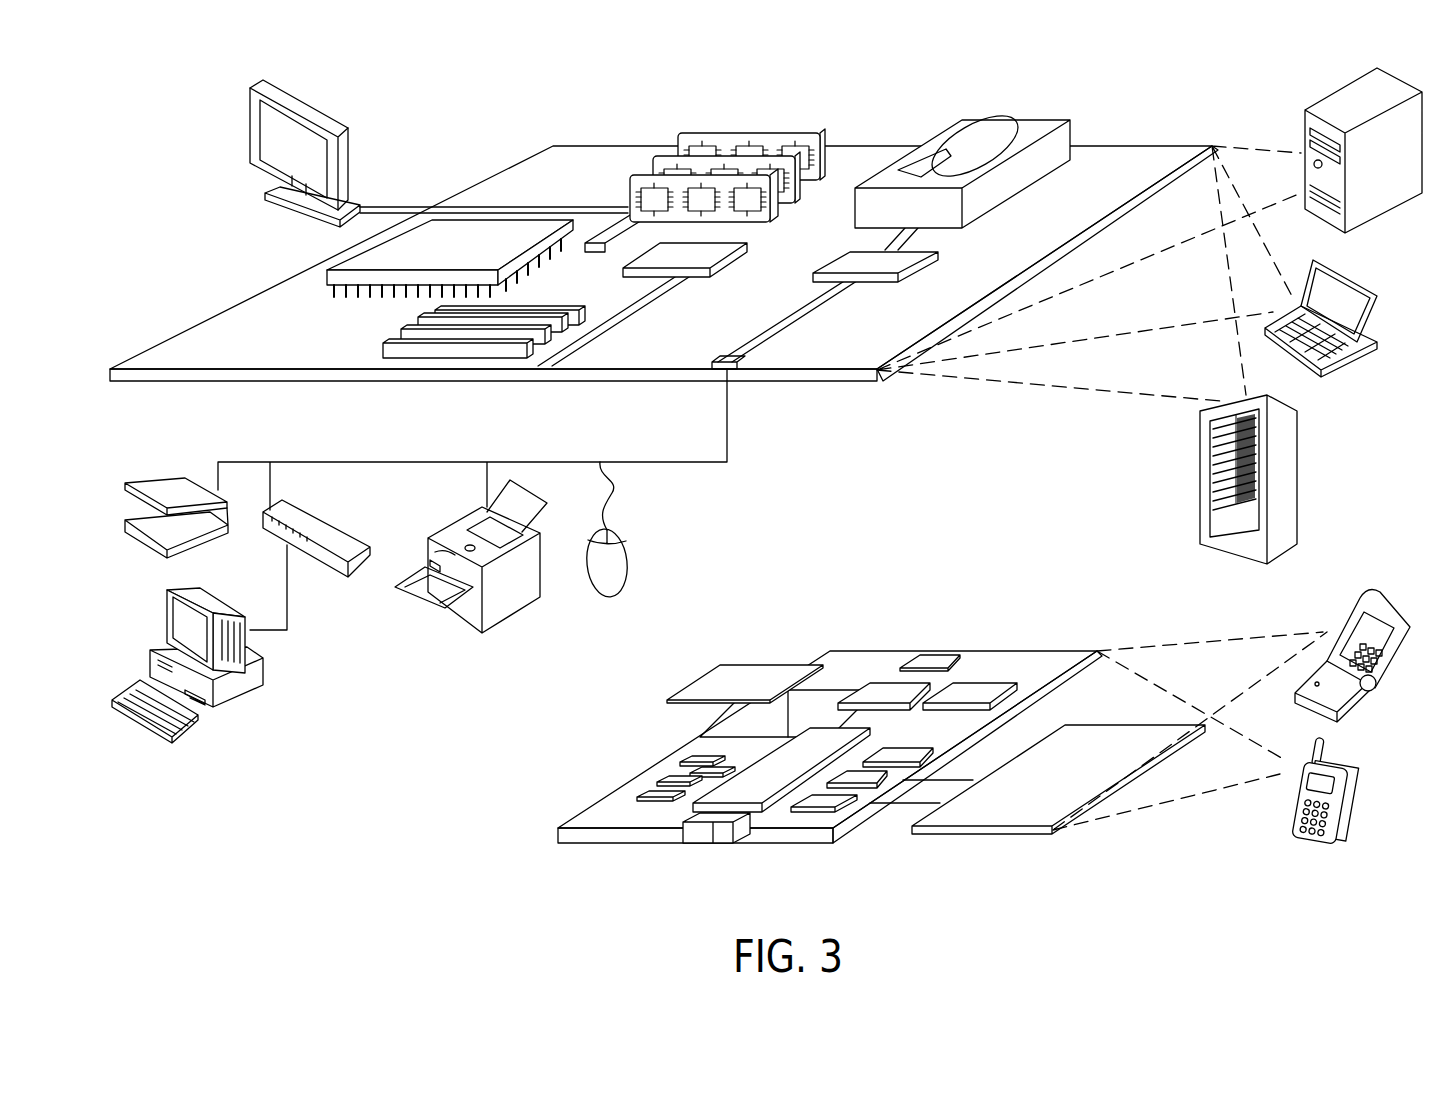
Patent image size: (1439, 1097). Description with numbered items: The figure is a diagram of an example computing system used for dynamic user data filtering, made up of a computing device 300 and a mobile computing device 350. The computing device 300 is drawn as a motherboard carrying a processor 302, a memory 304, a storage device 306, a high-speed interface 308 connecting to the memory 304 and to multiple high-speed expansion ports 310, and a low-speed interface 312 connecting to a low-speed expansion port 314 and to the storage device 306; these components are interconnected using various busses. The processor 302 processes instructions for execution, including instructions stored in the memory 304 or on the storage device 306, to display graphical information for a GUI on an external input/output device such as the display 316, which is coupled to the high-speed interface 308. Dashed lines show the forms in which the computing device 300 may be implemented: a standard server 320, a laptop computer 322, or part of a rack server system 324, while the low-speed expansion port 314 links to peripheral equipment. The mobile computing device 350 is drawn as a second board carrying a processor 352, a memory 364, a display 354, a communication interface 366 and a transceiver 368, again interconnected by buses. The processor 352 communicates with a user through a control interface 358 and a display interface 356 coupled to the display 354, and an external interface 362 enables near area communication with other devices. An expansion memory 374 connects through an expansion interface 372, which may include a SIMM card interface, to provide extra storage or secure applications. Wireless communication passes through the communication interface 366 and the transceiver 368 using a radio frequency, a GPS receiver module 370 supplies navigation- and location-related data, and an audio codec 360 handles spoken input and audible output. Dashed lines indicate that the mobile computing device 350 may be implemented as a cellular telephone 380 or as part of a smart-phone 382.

The computing device 300 is at (182, 110).
The processor 302 is at (327, 277).
The memory 304 is at (697, 133).
The storage device 306 is at (955, 122).
The high-speed interface 308 is at (655, 257).
The high-speed expansion ports 310 is at (383, 350).
The low-speed interface 312 is at (850, 262).
The low-speed expansion port 314 is at (737, 369).
The display 316 is at (313, 104).
The standard server 320 is at (1305, 120).
The laptop computer 322 is at (1337, 360).
The rack server system 324 is at (1200, 508).
The mobile computing device 350 is at (530, 802).
The processor 352 is at (755, 797).
The display 354 is at (1013, 813).
The display interface 356 is at (830, 810).
The control interface 358 is at (862, 786).
The audio codec 360 is at (897, 755).
The external interface 362 is at (712, 843).
The memory 364 is at (660, 784).
The communication interface 366 is at (883, 695).
The transceiver 368 is at (970, 695).
The GPS receiver module 370 is at (940, 668).
The expansion interface 372 is at (784, 663).
The expansion memory 374 is at (726, 666).
The cellular telephone 380 is at (1367, 615).
The smart-phone 382 is at (1292, 788).